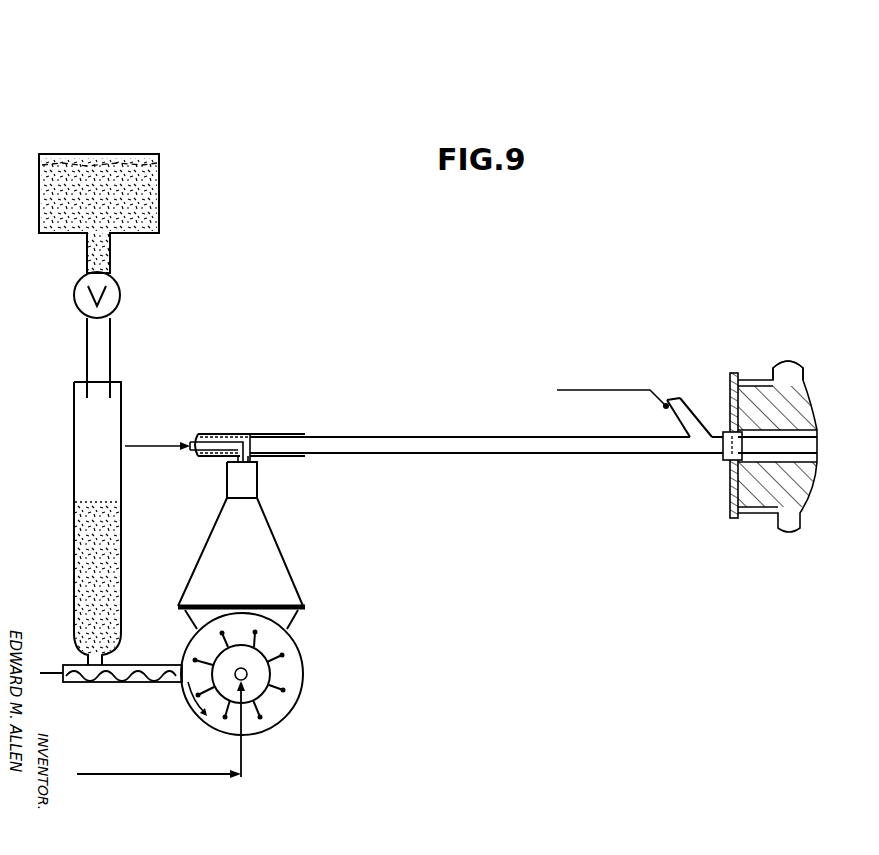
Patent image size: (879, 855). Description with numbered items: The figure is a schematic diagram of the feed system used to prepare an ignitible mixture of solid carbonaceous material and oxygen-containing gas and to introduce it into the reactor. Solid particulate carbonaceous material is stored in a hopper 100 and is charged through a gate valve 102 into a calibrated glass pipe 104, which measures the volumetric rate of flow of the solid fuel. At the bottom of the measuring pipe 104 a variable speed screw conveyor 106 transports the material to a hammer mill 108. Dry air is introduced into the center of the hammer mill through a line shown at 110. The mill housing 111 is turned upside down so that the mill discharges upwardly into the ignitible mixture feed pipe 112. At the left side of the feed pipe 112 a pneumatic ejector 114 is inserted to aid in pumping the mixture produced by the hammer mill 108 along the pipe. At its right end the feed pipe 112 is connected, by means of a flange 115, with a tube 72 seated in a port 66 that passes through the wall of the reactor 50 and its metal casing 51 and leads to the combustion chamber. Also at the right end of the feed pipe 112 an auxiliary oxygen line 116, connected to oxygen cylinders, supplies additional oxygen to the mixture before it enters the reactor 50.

The hopper 100 is at (160, 222).
The gate valve 102 is at (120, 295).
The calibrated glass pipe 104 is at (74, 494).
The variable speed screw conveyor 106 is at (82, 683).
The hammer mill 108 is at (290, 676).
The dry air line 110 is at (241, 750).
The mill housing 111 is at (280, 549).
The ignitible mixture feed pipe 112 is at (475, 454).
The pneumatic ejector 114 is at (193, 452).
The flange 115 is at (730, 510).
The auxiliary oxygen line 116 is at (683, 407).
The reactor 50 is at (778, 528).
The metal casing 51 is at (777, 366).
The port 66 is at (817, 431).
The tube 72 is at (803, 445).